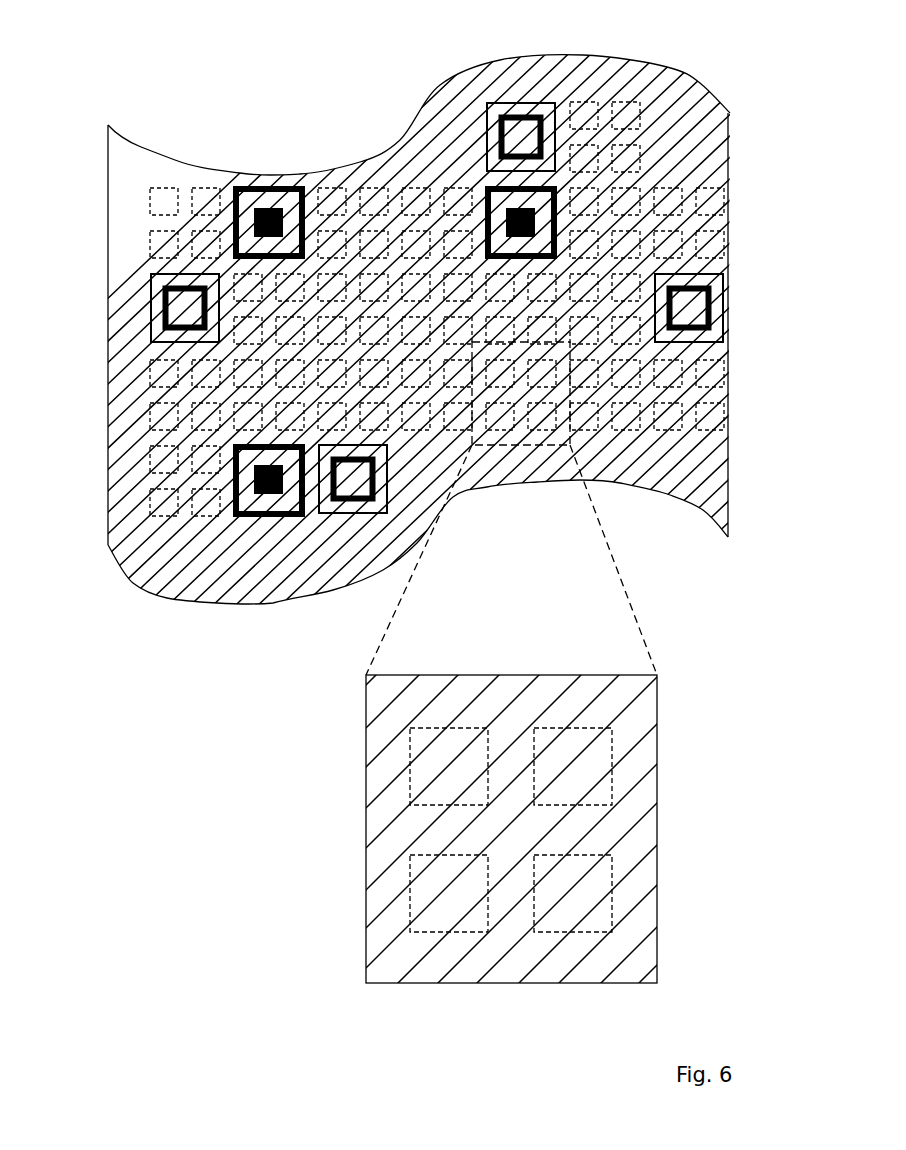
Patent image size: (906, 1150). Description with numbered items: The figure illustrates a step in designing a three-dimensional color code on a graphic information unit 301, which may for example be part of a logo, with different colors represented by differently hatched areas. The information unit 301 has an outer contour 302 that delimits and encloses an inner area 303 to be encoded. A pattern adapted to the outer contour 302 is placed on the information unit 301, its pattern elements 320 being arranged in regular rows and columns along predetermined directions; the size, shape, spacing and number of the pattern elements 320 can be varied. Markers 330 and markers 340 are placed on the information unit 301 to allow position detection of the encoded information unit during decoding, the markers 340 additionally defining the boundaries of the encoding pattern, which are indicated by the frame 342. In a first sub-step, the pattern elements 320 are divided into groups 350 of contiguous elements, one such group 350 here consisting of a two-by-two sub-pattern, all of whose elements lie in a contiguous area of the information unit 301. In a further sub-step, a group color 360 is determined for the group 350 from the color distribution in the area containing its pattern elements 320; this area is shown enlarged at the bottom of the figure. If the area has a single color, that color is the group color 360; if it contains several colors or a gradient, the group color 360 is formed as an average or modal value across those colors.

The graphic information unit 301 is at (310, 136).
The outer contour 302 is at (421, 112).
The inner area 303 is at (728, 126).
The pattern elements 320 is at (150, 197).
The markers 330 is at (254, 185).
The markers 340 is at (527, 104).
The frame 342 is at (725, 537).
The group 350 is at (571, 393).
The group color 360 is at (628, 820).